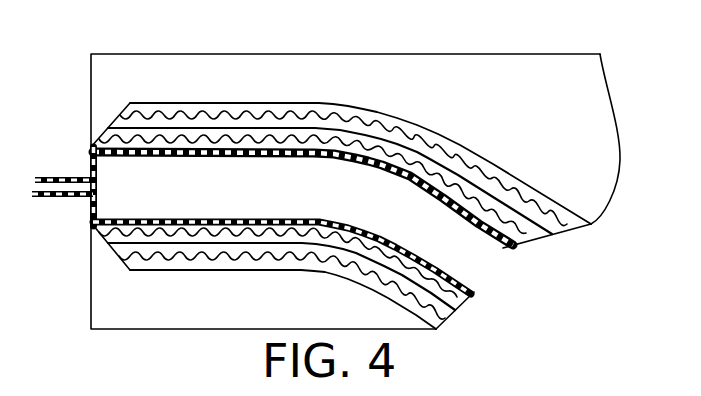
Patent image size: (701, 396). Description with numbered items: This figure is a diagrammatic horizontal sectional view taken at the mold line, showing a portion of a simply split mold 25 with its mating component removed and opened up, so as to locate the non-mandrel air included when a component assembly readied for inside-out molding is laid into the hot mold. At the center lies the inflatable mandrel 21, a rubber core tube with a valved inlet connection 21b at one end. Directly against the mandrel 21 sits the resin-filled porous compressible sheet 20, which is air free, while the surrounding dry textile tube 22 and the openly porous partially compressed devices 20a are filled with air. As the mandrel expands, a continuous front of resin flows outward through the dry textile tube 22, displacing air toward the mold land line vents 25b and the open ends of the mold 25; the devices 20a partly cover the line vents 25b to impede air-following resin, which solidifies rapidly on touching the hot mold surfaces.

The openly porous compressible sheet 20 is at (510, 244).
The openly porous partially compressed device 20a is at (420, 128).
The inflatable mandrel 21 is at (213, 158).
The valved inlet connection 21b is at (34, 200).
The dry textile tube 22 is at (174, 118).
The mold 25 is at (323, 53).
The line vent 25b is at (597, 124).